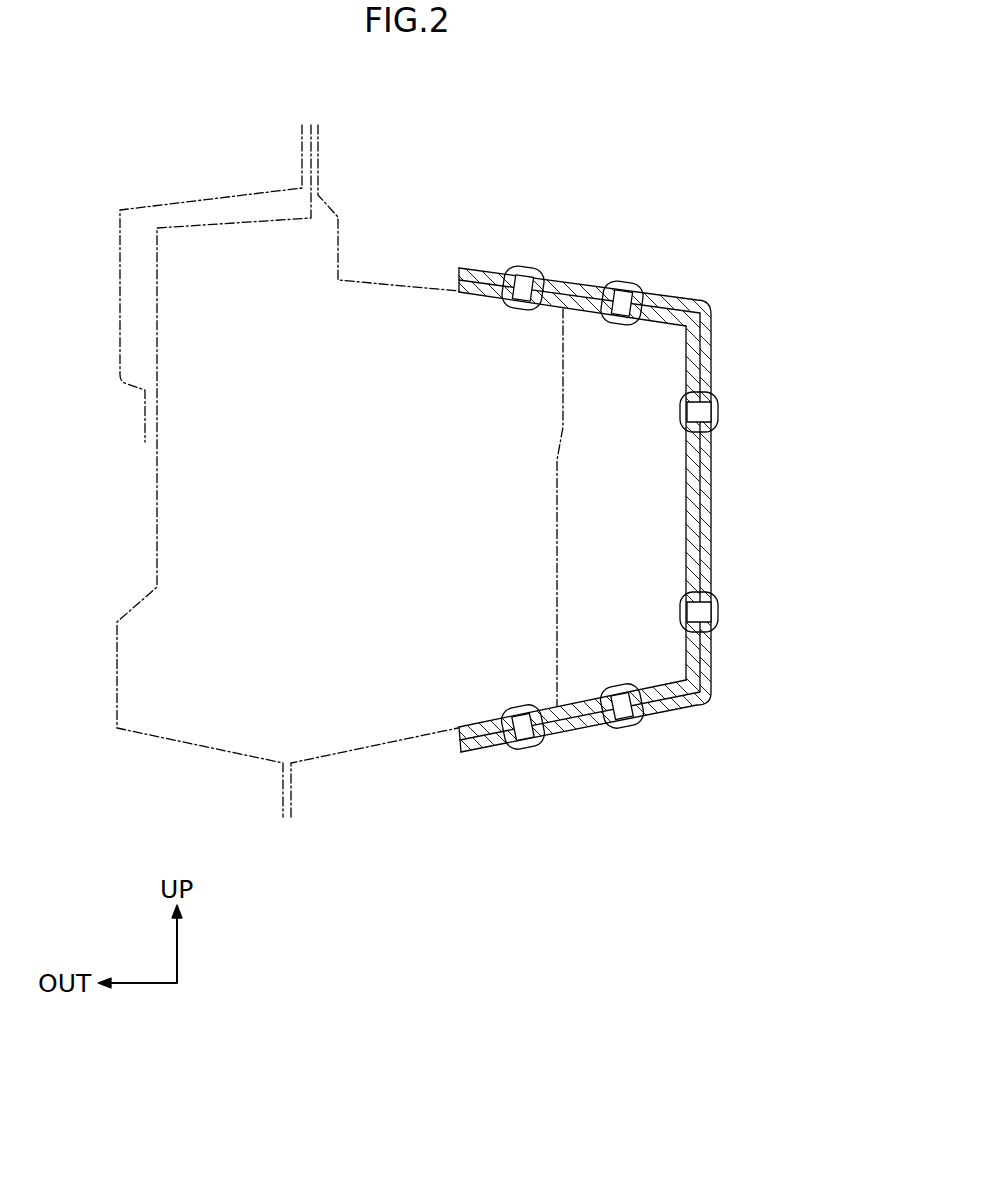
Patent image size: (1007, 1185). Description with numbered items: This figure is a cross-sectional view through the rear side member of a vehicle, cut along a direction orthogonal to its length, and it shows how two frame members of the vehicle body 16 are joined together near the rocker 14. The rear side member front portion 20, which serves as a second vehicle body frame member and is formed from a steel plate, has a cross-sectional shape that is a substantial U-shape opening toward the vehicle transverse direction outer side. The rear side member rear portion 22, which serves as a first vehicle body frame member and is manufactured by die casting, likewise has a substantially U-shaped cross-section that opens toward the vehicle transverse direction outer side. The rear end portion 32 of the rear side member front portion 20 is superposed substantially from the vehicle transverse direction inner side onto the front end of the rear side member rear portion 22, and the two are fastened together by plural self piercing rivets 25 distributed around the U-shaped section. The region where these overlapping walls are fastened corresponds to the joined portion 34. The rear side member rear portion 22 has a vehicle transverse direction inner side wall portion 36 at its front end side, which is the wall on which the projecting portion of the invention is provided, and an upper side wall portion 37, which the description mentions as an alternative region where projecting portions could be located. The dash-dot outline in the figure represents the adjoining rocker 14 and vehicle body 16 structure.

The rocker 14 is at (393, 287).
The vehicle body 16 is at (471, 145).
The rear side member front portion 20 is at (714, 347).
The rear side member rear portion 22 is at (692, 507).
The self piercing rivet 25 is at (526, 272).
The rear end portion 32 is at (503, 510).
The joined portion 34 is at (714, 522).
The vehicle transverse direction inner side wall portion 36 is at (688, 556).
The upper side wall portion 37 is at (585, 310).